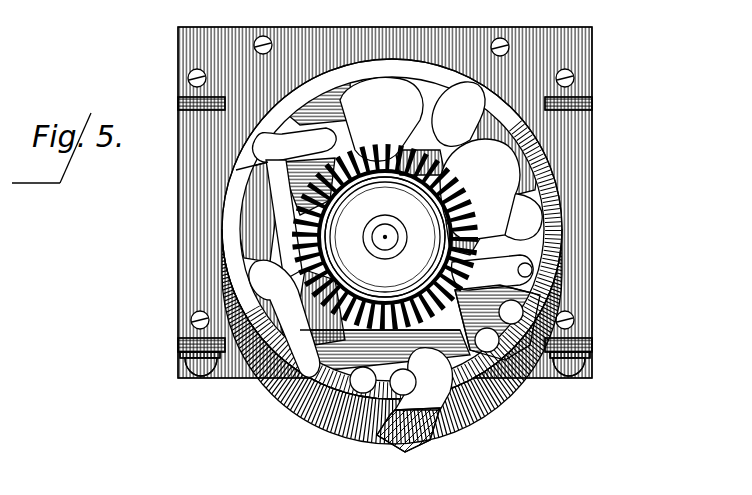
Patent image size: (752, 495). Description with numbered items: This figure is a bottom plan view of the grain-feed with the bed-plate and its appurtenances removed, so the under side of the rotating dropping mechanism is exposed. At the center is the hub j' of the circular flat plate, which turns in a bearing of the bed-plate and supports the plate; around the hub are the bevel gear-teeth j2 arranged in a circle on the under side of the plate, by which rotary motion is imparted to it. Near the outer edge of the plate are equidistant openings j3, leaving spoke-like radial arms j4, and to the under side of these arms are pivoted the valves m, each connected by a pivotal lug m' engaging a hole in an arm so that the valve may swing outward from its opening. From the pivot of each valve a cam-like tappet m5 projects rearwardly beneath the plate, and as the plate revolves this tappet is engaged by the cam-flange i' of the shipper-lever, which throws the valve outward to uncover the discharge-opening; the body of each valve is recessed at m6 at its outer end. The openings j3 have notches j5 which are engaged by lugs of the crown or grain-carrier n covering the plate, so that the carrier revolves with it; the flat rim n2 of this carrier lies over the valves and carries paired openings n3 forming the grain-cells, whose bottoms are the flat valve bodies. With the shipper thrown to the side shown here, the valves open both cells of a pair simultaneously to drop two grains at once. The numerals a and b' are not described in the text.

The frame plate a is at (596, 61).
The plate brackets b' is at (386, 234).
The cam-flange i' is at (407, 240).
The hub j' is at (392, 237).
The bevel gear-teeth j2 is at (450, 172).
The openings j3 is at (380, 337).
The radial arms j4 is at (384, 216).
The notches j5 is at (493, 265).
The valves m is at (353, 273).
The pivotal lug m' is at (480, 189).
The tappet m5 is at (388, 122).
The recess m6 is at (458, 114).
The grain-carrier n is at (395, 268).
The rim n2 is at (497, 322).
The openings n3 is at (436, 347).